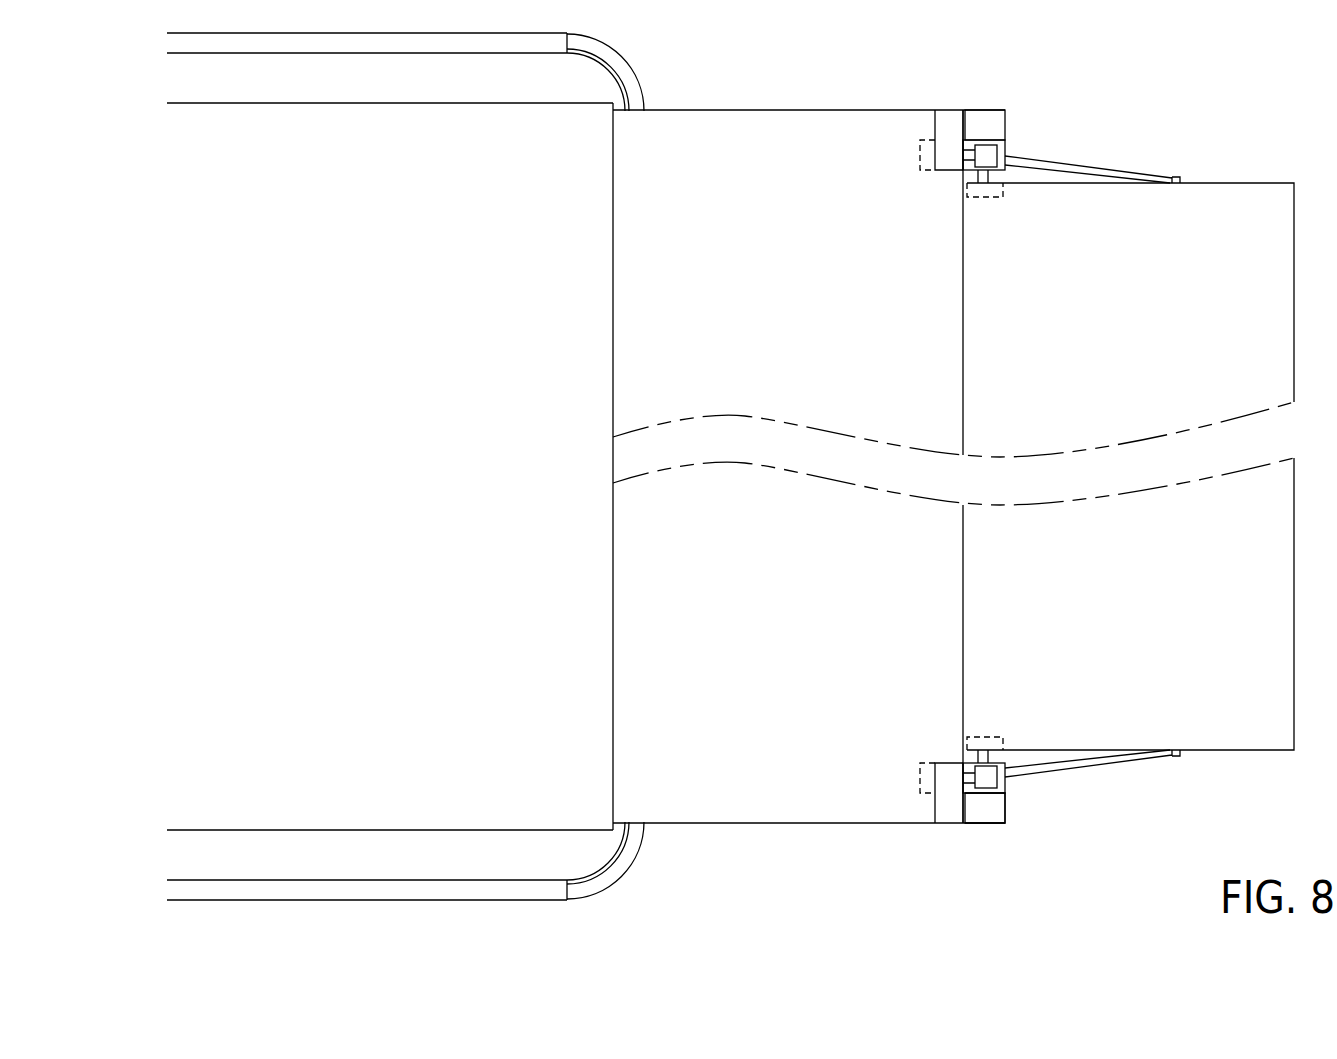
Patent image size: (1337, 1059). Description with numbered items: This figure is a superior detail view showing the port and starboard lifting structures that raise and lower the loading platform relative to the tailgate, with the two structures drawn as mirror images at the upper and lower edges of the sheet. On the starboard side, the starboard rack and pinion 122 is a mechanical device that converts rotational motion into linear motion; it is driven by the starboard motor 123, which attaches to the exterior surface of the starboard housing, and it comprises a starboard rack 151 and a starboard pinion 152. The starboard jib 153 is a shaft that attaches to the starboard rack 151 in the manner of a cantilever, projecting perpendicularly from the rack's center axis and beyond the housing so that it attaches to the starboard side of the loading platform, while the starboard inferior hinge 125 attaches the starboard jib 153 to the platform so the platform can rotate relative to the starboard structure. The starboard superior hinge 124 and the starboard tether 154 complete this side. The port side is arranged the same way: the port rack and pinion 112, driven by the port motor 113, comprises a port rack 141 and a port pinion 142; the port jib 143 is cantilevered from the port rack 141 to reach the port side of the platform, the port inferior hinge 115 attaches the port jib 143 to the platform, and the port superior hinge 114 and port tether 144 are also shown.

The port rack and pinion 112 is at (1000, 812).
The port motor 113 is at (920, 778).
The port superior hinge 114 is at (947, 805).
The port inferior hinge 115 is at (988, 738).
The starboard rack and pinion 122 is at (992, 153).
The starboard motor 123 is at (920, 157).
The starboard superior hinge 124 is at (945, 168).
The starboard inferior hinge 125 is at (985, 197).
The port rack 141 is at (977, 813).
The port pinion 142 is at (992, 783).
The port jib 143 is at (997, 757).
The port tether 144 is at (1125, 765).
The starboard rack 151 is at (978, 120).
The starboard pinion 152 is at (1007, 150).
The starboard jib 153 is at (988, 179).
The starboard tether 154 is at (1120, 168).